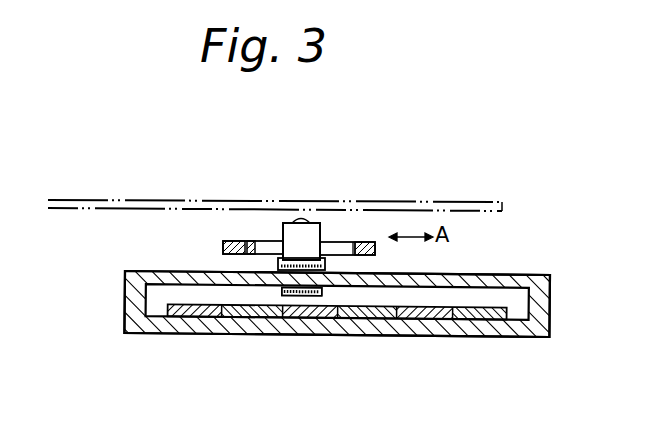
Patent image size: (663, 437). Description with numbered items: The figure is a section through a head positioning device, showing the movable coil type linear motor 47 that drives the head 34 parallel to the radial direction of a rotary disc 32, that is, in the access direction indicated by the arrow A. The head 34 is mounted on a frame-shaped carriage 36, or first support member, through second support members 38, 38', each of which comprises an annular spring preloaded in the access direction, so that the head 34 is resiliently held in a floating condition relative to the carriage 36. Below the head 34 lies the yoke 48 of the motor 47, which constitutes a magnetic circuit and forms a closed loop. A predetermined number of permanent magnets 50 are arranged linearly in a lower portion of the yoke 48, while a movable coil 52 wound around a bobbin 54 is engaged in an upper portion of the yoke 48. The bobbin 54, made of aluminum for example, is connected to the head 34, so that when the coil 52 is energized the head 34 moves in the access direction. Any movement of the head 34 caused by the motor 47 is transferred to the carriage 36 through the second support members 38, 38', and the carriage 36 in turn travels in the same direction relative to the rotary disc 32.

The rotary disc 32 is at (475, 200).
The head 34 is at (287, 228).
The frame-shaped carriage 36 is at (223, 248).
The second support member 38 is at (305, 235).
The second support member 38' is at (305, 233).
The movable coil type linear motor 47 is at (443, 268).
The yoke 48 is at (547, 304).
The permanent magnets 50 is at (188, 313).
The movable coil 52 is at (316, 294).
The bobbin 54 is at (323, 292).